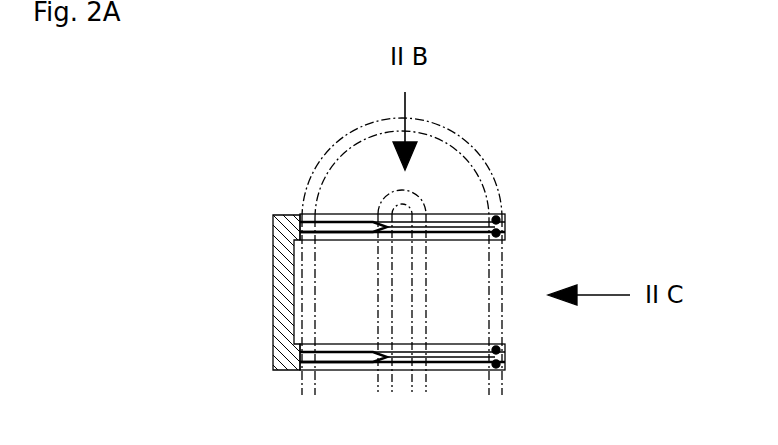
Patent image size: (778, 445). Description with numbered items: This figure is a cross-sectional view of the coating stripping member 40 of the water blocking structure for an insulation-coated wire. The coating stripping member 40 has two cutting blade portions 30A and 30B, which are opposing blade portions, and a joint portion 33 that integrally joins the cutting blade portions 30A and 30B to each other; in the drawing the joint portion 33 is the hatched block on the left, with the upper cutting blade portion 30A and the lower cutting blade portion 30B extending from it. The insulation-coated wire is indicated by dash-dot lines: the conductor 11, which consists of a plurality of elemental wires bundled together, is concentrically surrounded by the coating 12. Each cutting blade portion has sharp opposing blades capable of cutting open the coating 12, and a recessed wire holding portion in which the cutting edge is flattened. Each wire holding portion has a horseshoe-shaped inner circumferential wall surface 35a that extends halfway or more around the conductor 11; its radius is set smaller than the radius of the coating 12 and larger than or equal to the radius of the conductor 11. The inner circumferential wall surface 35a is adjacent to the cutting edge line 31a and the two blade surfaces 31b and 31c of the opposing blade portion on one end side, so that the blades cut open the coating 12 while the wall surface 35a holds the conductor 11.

The conductor 11 is at (328, 176).
The coating 12 is at (350, 137).
The cutting blade portion 30A is at (482, 241).
The cutting blade portion 30B is at (480, 372).
The cutting edge line 31a is at (452, 216).
The blade surface 31b is at (500, 217).
The blade surface 31c is at (505, 245).
The joint portion 33 is at (280, 300).
The inner circumferential wall surface 35a is at (345, 228).
The coating stripping member 40 is at (248, 247).